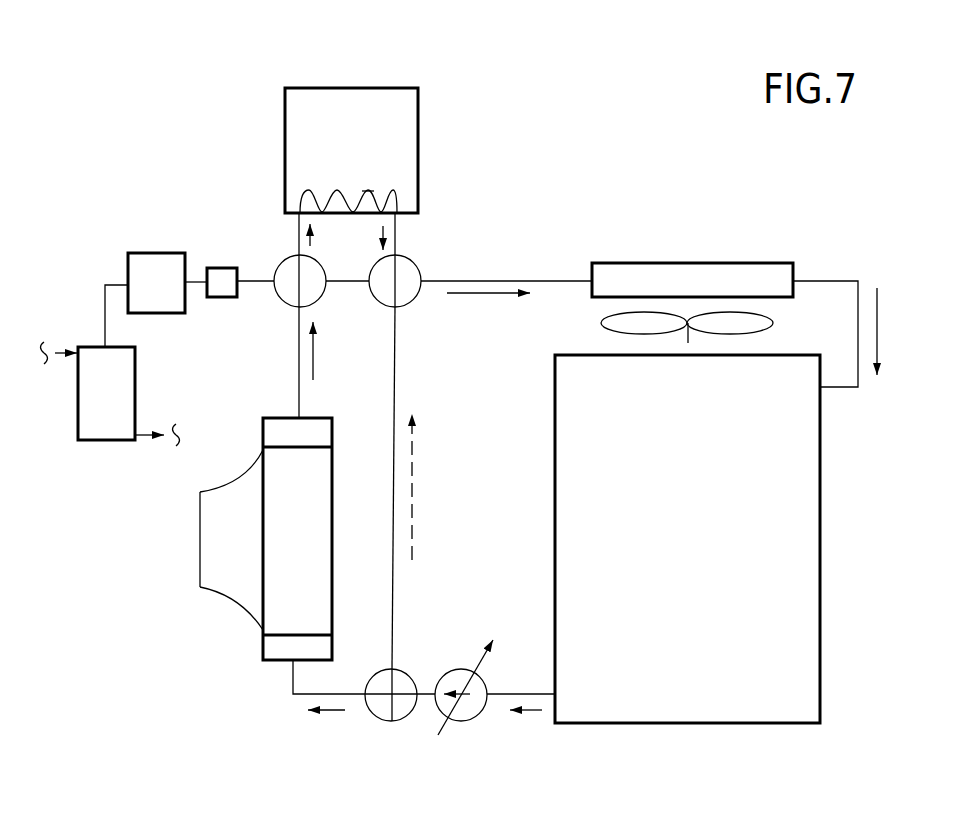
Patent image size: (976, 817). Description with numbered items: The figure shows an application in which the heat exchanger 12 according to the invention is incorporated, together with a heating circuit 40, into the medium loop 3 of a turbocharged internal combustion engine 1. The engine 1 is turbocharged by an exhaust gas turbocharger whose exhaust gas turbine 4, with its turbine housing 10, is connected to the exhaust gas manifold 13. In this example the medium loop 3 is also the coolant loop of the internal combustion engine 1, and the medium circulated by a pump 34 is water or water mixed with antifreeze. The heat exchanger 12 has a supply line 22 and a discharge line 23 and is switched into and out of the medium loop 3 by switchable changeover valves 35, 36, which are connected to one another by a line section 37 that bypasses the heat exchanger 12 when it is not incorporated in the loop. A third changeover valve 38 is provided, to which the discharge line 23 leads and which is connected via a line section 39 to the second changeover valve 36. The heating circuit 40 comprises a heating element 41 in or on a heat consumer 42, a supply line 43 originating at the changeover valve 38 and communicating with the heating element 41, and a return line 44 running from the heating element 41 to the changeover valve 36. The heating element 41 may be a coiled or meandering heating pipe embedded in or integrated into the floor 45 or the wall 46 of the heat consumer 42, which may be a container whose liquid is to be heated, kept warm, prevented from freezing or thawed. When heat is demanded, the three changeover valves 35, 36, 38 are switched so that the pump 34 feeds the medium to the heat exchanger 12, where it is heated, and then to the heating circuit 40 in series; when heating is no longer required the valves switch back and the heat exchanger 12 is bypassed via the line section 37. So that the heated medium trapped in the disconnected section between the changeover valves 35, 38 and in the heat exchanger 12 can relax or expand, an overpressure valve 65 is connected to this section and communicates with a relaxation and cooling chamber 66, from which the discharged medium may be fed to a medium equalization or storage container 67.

The internal combustion engine 1 is at (698, 522).
The medium loop 3 is at (554, 275).
The exhaust gas turbine 4 is at (213, 598).
The turbine housing 10 is at (315, 547).
The heat exchanger 12 is at (266, 664).
The exhaust gas manifold 13 is at (283, 427).
The supply line 22 is at (343, 693).
The discharge line 23 is at (300, 398).
The pump 34 is at (478, 717).
The changeover valve 35 is at (382, 705).
The changeover valve 36 is at (414, 268).
The line section 37 is at (393, 605).
The changeover valve 38 is at (323, 300).
The line section 39 is at (352, 280).
The heating circuit 40 is at (352, 183).
The heating element 41 is at (364, 192).
The heat consumer 42 is at (374, 86).
The supply line 43 is at (297, 242).
The return line 44 is at (400, 242).
The floor 45 is at (333, 218).
The wall 46 is at (421, 101).
The overpressure valve 65 is at (220, 277).
The relaxation and cooling chamber 66 is at (147, 268).
The medium equalization or storage container 67 is at (100, 388).